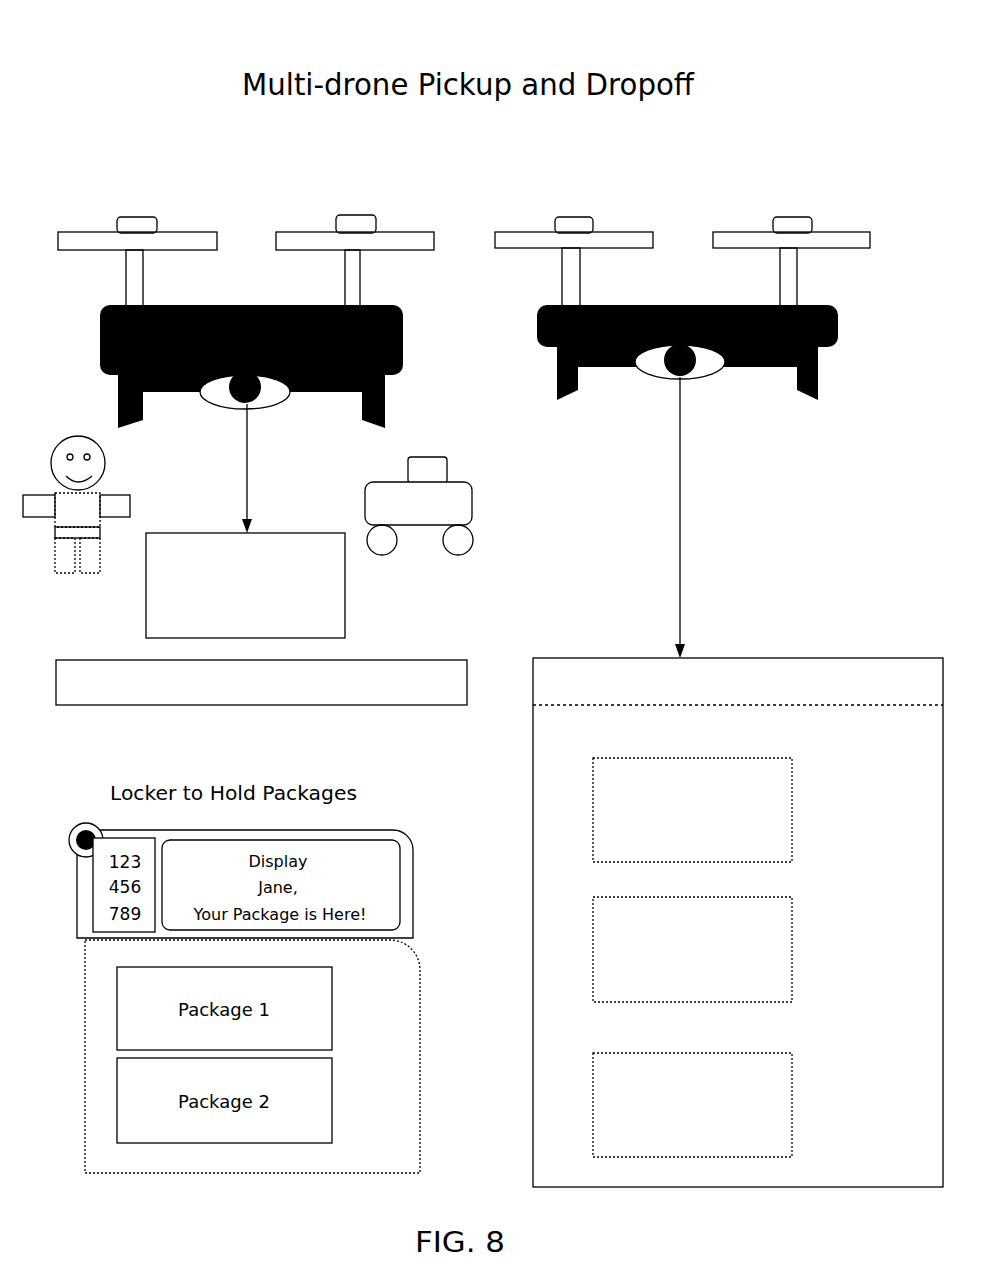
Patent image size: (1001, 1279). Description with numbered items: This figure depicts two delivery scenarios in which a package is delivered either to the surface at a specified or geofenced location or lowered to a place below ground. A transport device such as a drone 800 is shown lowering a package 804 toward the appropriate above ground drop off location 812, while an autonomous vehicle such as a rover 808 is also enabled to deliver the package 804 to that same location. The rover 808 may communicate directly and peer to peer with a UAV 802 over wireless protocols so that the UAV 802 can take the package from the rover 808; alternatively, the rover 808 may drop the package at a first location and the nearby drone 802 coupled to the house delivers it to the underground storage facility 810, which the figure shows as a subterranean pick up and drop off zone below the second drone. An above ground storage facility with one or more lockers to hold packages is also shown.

The drone 800 is at (403, 328).
The UAV 802 is at (838, 326).
The package 804 is at (345, 583).
The rover 808 is at (468, 536).
The subterranean pick up / drop off zone 810 is at (838, 782).
The drop off location 812 is at (433, 694).